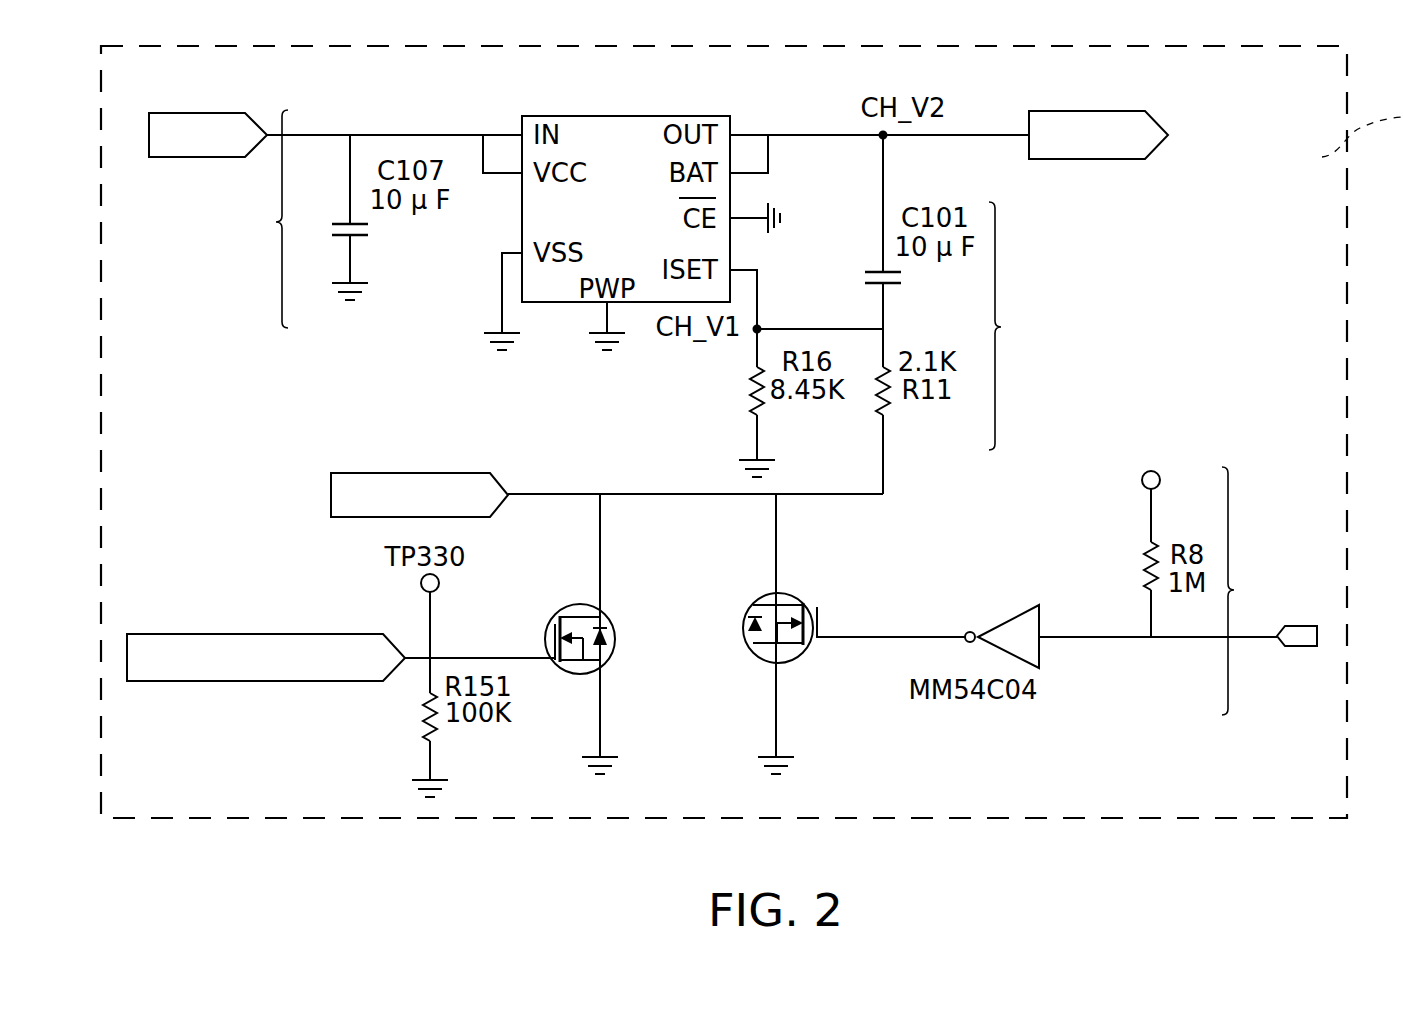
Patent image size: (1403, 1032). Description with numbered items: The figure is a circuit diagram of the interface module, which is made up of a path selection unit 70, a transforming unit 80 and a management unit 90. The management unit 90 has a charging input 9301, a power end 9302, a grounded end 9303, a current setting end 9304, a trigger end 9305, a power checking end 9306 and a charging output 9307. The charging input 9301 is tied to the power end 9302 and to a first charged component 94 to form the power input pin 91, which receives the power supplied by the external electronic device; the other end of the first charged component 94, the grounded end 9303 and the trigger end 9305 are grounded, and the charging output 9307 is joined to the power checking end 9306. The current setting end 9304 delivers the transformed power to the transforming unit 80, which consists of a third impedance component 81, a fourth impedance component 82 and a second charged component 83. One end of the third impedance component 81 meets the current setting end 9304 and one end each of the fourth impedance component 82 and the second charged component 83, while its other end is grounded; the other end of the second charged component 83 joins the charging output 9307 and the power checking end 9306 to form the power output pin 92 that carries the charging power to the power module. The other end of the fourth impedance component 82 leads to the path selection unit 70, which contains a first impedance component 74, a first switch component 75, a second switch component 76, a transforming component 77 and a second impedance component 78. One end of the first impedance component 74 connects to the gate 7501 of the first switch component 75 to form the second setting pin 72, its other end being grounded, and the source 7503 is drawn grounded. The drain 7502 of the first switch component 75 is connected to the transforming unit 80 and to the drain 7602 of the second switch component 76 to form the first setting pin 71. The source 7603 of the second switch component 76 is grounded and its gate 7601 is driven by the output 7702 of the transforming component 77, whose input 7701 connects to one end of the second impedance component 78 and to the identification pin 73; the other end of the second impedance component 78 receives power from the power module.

The path selection unit 70 is at (1249, 591).
The first setting pin 71 is at (410, 478).
The second setting pin 72 is at (229, 637).
The identification pin 73 is at (1301, 647).
The first impedance component 74 is at (440, 728).
The first switch component 75 is at (571, 607).
The gate of the first switch component 7501 is at (553, 656).
The drain of the first switch component 7502 is at (600, 617).
The source of the first switch component 7503 is at (600, 660).
The second switch component 76 is at (797, 628).
The gate of the second switch component 7601 is at (820, 636).
The drain of the second switch component 7602 is at (792, 602).
The source of the second switch component 7603 is at (770, 645).
The transforming component 77 is at (1032, 625).
The input of the transforming component 7701 is at (1042, 634).
The output of the transforming component 7702 is at (970, 631).
The second impedance component 78 is at (1143, 560).
The transforming unit 80 is at (1016, 326).
The third impedance component 81 is at (765, 406).
The fourth impedance component 82 is at (892, 407).
The second charged component 83 is at (892, 290).
The management unit 90 is at (261, 219).
The power input pin 91 is at (200, 159).
The power output pin 92 is at (1113, 160).
The first charged component 94 is at (358, 243).
The charging input 9301 is at (483, 133).
The power end 9302 is at (496, 176).
The grounded end 9303 is at (483, 248).
The current setting end 9304 is at (748, 268).
The trigger end 9305 is at (752, 234).
The power checking end 9306 is at (750, 174).
The charging output 9307 is at (750, 133).